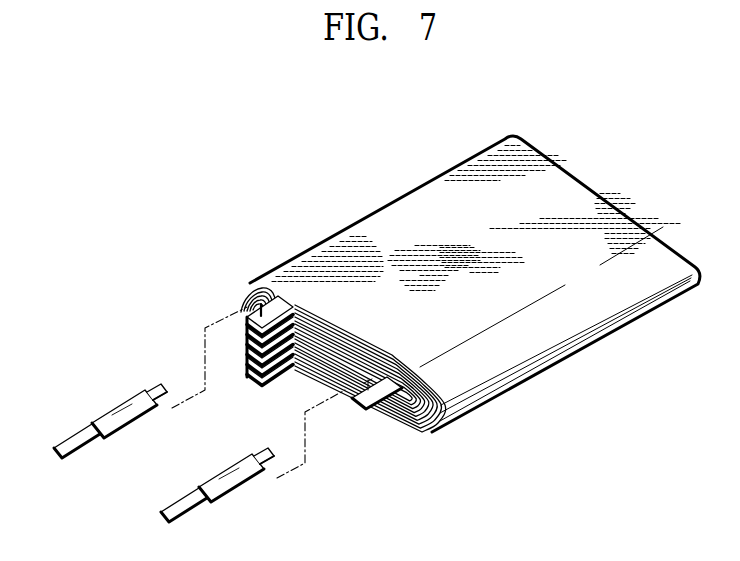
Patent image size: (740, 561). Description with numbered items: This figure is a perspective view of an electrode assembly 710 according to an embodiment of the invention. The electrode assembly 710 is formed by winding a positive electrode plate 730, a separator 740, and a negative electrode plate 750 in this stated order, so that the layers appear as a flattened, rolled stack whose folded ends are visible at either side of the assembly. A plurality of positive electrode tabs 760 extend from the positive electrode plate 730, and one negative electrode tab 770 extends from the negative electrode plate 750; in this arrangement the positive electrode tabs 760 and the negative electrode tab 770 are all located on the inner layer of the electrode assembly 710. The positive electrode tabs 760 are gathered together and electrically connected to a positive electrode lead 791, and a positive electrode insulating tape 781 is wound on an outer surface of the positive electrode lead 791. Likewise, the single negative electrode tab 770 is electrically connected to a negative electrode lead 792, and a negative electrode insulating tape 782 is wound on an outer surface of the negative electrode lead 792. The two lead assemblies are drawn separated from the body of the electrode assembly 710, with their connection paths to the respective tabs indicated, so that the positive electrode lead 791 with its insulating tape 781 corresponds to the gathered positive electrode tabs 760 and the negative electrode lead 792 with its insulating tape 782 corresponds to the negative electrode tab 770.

The electrode assembly 710 is at (316, 174).
The positive electrode plate 730 is at (403, 422).
The separator 740 is at (413, 430).
The negative electrode plate 750 is at (422, 430).
The positive electrode tabs 760 is at (272, 302).
The negative electrode tab 770 is at (353, 411).
The positive electrode insulating tape 781 is at (124, 400).
The negative electrode insulating tape 782 is at (227, 470).
The positive electrode lead 791 is at (72, 446).
The negative electrode lead 792 is at (178, 506).